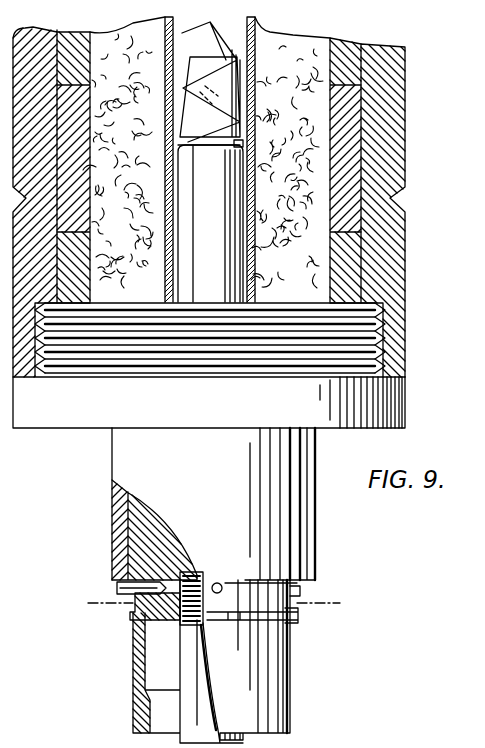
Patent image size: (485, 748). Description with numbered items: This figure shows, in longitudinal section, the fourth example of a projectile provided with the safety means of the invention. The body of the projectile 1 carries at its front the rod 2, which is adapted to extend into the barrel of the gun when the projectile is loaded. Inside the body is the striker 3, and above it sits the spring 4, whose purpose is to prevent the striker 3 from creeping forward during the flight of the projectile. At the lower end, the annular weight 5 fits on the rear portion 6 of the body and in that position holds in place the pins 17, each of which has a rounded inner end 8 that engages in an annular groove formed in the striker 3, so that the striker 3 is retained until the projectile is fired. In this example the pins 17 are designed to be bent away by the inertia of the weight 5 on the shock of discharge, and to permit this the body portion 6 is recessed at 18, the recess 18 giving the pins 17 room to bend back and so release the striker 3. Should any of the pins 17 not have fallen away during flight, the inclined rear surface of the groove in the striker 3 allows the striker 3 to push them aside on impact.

The body of the projectile 1 is at (387, 147).
The rod 2 is at (200, 723).
The striker 3 is at (210, 223).
The spring 4 is at (250, 15).
The weight 5 is at (112, 502).
The rear portion of the body 6 is at (150, 547).
The rounded inner end 8 is at (133, 612).
The pins 17 is at (117, 585).
The recess 18 is at (287, 612).